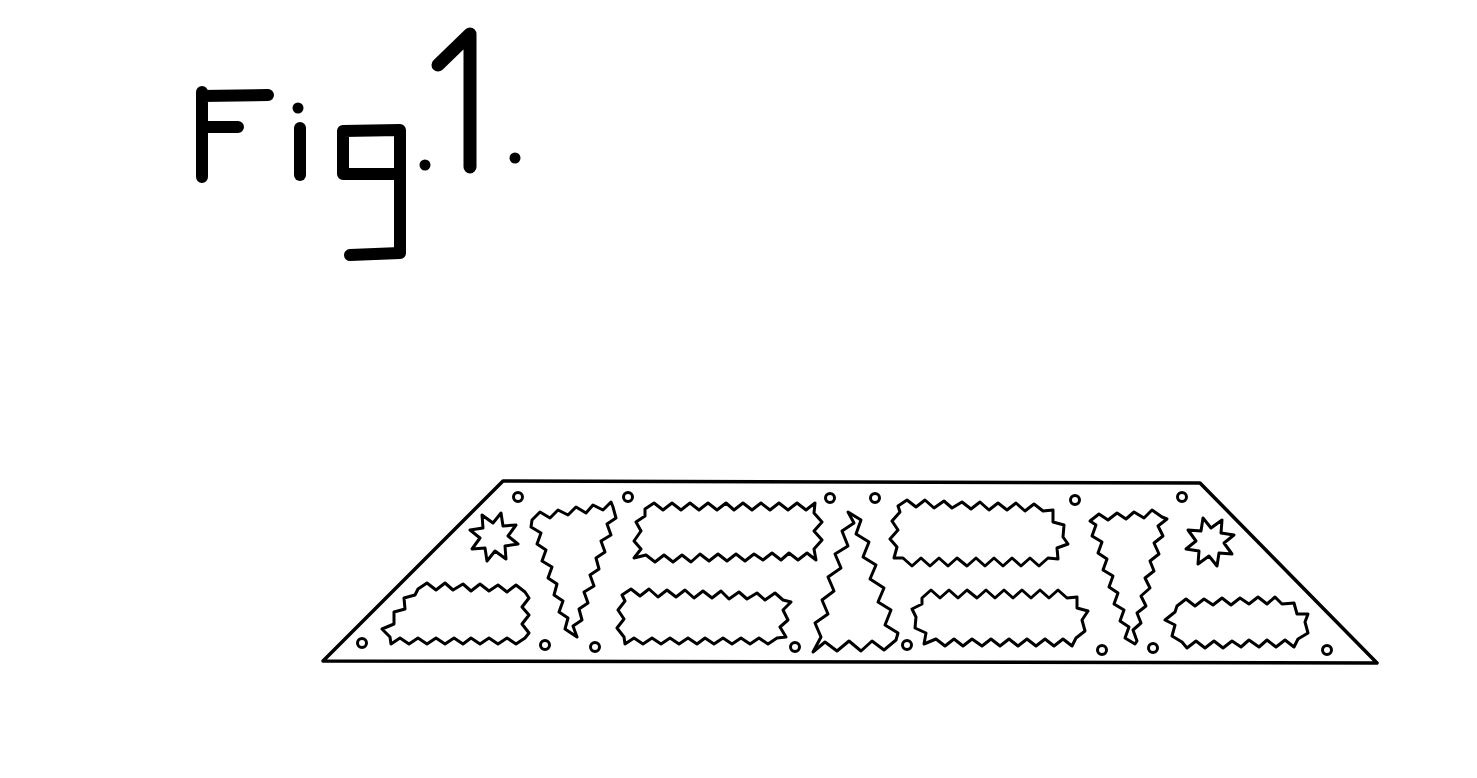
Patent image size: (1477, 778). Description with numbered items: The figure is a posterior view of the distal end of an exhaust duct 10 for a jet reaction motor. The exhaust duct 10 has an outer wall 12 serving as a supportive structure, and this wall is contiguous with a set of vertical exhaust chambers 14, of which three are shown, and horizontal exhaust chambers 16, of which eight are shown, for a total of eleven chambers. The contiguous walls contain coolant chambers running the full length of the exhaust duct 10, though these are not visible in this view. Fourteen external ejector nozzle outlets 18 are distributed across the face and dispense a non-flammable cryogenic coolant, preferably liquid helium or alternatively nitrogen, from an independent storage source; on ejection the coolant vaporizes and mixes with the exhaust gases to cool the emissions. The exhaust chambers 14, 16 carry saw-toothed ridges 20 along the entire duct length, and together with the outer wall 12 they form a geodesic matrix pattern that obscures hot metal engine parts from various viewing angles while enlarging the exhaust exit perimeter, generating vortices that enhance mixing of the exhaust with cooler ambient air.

The exhaust duct 10 is at (983, 687).
The outer wall 12 is at (1247, 577).
The vertical exhaust chambers 14 is at (1118, 547).
The horizontal exhaust chambers 16 is at (960, 532).
The external ejector nozzle outlets 18 is at (1338, 648).
The saw-toothed ridges 20 is at (1240, 647).